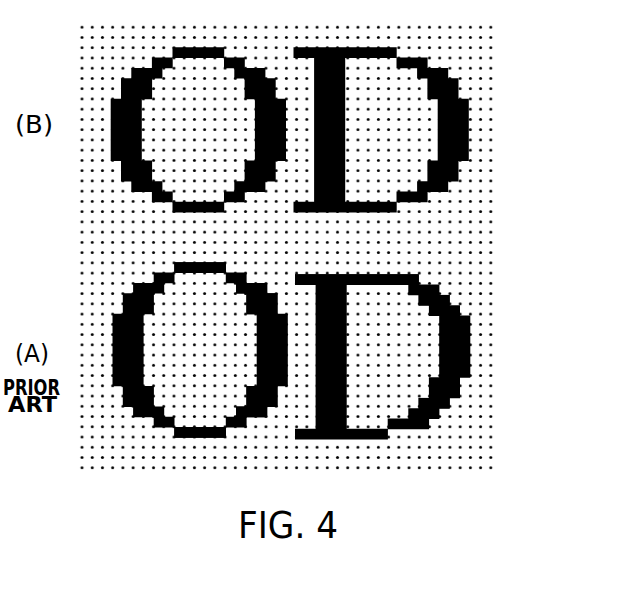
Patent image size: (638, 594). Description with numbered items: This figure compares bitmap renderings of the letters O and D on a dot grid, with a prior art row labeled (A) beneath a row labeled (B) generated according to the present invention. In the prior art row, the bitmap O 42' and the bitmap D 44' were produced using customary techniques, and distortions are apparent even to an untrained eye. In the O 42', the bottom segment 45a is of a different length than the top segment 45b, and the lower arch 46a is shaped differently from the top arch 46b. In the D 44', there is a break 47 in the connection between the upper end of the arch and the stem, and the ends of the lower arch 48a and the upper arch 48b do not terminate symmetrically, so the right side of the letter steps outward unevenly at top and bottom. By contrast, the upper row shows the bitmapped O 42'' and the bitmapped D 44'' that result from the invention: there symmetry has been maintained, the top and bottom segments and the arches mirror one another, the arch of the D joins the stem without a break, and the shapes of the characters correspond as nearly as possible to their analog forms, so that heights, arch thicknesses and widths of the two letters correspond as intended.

The bitmapped O 42'' is at (157, 135).
The bitmapped D 44'' is at (408, 129).
The prior art bitmap O 42' is at (159, 358).
The prior art bitmap D 44' is at (405, 356).
The top segment 45b is at (185, 262).
The bottom segment 45a is at (195, 437).
The top arch 46b is at (242, 316).
The lower arch 46a is at (220, 410).
The break 47 is at (363, 276).
The upper arch 48b is at (403, 290).
The lower arch 48a is at (398, 410).